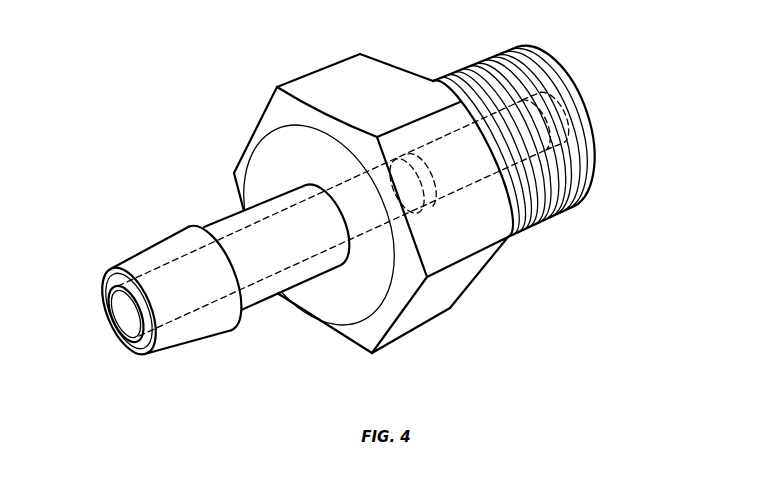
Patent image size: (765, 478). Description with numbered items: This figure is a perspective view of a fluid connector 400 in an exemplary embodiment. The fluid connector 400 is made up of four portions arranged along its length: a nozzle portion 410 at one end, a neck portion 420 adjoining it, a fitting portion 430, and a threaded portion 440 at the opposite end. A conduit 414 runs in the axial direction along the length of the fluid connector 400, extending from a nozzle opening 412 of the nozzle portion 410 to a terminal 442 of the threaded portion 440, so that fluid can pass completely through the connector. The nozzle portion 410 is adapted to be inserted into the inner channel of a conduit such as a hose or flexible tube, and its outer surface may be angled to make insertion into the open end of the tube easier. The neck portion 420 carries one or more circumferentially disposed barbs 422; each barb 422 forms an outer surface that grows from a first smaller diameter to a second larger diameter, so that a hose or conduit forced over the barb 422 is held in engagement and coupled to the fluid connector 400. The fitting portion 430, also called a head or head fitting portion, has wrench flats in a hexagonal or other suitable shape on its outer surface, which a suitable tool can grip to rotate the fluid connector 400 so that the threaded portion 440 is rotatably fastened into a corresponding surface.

The fluid connector 400 is at (148, 35).
The nozzle portion 410 is at (160, 367).
The nozzle opening 412 is at (122, 314).
The conduit 414 is at (494, 112).
The neck portion 420 is at (244, 321).
The barb 422 is at (188, 222).
The fitting portion 430 is at (375, 357).
The threaded portion 440 is at (510, 238).
The terminal 442 is at (572, 108).